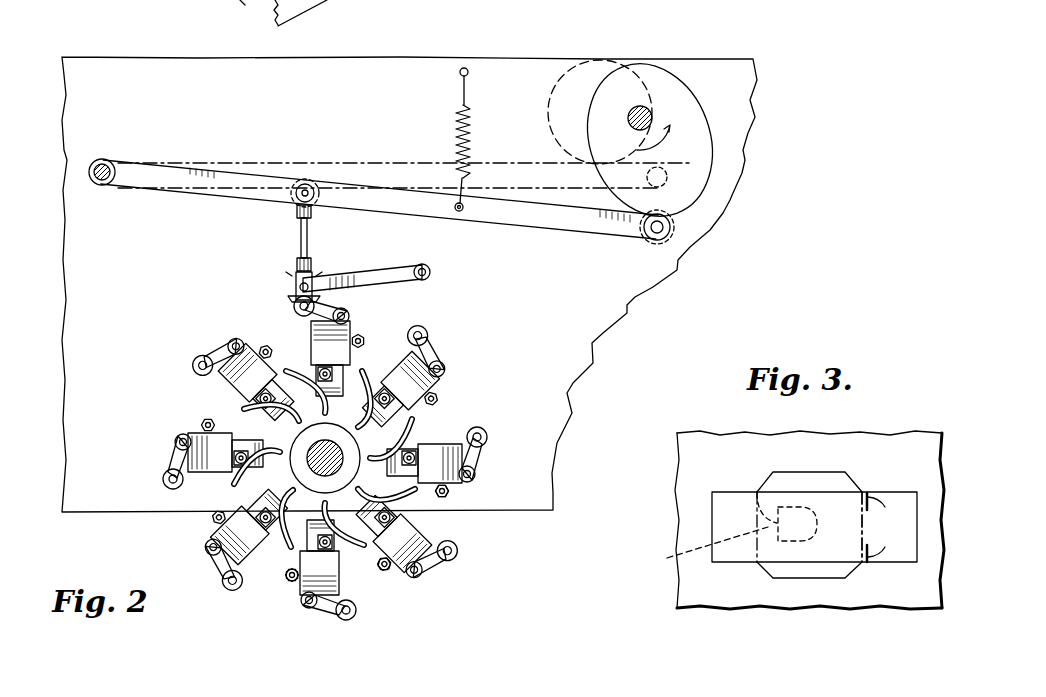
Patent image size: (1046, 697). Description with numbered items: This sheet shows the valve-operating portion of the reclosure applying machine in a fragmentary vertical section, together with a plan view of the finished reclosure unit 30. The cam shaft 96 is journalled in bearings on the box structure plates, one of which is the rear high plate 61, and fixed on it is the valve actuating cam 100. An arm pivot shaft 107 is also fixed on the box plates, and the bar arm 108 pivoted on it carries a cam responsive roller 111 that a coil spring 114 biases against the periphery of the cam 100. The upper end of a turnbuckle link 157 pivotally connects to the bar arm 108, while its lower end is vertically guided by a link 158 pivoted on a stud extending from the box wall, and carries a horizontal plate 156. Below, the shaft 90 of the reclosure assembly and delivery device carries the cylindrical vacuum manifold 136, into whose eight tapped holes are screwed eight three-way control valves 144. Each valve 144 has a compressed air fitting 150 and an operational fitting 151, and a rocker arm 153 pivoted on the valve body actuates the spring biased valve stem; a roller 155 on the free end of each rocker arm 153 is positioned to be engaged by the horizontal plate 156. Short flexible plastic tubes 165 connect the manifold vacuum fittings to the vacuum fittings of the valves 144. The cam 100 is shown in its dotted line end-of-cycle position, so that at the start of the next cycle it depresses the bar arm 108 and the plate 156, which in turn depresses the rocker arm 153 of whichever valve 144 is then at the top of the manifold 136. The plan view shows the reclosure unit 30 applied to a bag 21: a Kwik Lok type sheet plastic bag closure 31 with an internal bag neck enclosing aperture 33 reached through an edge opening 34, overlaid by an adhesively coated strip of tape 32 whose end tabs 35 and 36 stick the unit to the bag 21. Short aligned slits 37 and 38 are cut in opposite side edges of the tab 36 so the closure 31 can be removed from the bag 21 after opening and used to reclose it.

In FIG. 2, the rear high plate 61 is at (515, 61).
In FIG. 2, the arm pivot shaft 107 is at (94, 166).
In FIG. 2, the bar arm 108 is at (352, 167).
In FIG. 2, the cam responsive roller 111 is at (680, 235).
In FIG. 2, the coil spring 114 is at (455, 115).
In FIG. 2, the valve actuating cam 100 is at (620, 64).
In FIG. 2, the cam shaft 96 is at (652, 117).
In FIG. 2, the turnbuckle link 157 is at (299, 237).
In FIG. 2, the link 158 is at (364, 270).
In FIG. 2, the horizontal plate 156 is at (292, 294).
In FIG. 2, the roller 155 is at (288, 319).
In FIG. 2, the three-way control valve 144 is at (347, 340).
In FIG. 2, the rocker arm 153 is at (483, 448).
In FIG. 2, the operational fitting 151 is at (245, 397).
In FIG. 2, the shaft 90 is at (288, 553).
In FIG. 2, the compressed air fitting 150 is at (290, 590).
In FIG. 2, the flexible plastic tube 165 is at (363, 558).
In FIG. 2, the vacuum manifold 136 is at (433, 500).
In FIG. 3, the bag 21 is at (690, 457).
In FIG. 3, the reclosure unit 30 is at (755, 456).
In FIG. 3, the adhesively coated strip of tape 32 is at (807, 494).
In FIG. 3, the sheet plastic bag closure 31 is at (838, 474).
In FIG. 3, the end tab 36 is at (900, 510).
In FIG. 3, the slit 37 is at (887, 500).
In FIG. 3, the slit 38 is at (883, 553).
In FIG. 3, the bag neck enclosing aperture 33 is at (800, 538).
In FIG. 3, the end tab 35 is at (715, 533).
In FIG. 3, the edge opening 34 is at (700, 551).